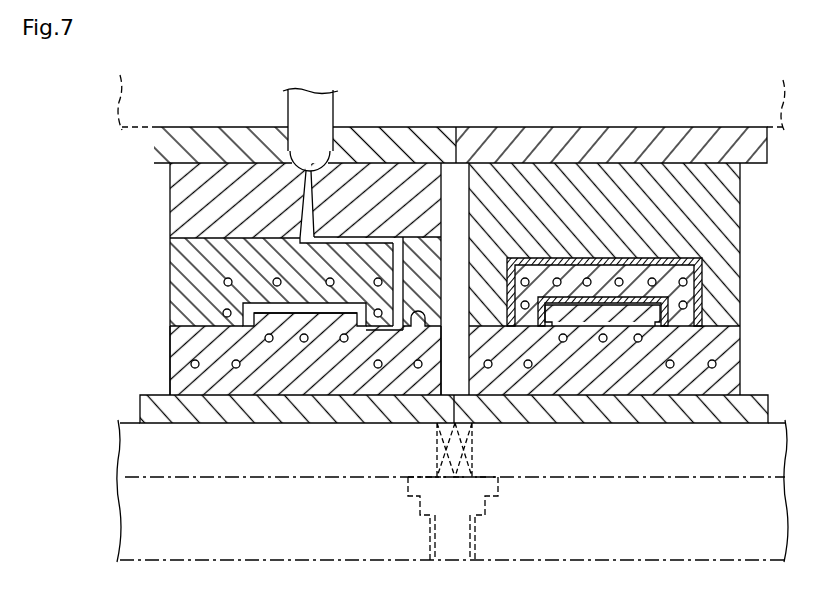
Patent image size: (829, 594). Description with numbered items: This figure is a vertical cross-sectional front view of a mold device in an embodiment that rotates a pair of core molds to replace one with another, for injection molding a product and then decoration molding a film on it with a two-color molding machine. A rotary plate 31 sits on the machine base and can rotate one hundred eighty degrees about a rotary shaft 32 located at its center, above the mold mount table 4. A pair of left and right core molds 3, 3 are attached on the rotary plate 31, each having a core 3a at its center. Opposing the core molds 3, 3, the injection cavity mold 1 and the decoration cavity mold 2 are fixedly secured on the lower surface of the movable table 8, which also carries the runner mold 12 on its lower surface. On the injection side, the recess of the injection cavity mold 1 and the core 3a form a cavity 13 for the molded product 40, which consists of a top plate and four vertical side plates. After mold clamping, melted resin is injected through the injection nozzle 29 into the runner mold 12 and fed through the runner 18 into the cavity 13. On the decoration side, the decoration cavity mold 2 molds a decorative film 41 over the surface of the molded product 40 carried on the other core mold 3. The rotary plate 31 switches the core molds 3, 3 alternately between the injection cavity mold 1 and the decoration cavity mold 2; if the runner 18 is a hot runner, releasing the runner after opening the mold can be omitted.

The movable table 8 is at (133, 92).
The runner mold 12 is at (213, 177).
The injection nozzle 29 is at (325, 115).
The runner 18 is at (392, 240).
The decorative film 41 is at (601, 262).
The decoration cavity mold 2 is at (742, 241).
The injection cavity mold 1 is at (168, 292).
The core mold 3 is at (172, 362).
The core 3a is at (316, 323).
The rotary plate 31 is at (147, 457).
The cavity 13 is at (289, 310).
The molded product 40 is at (587, 320).
The mold mount table 4 is at (140, 520).
The rotary shaft 32 is at (445, 537).